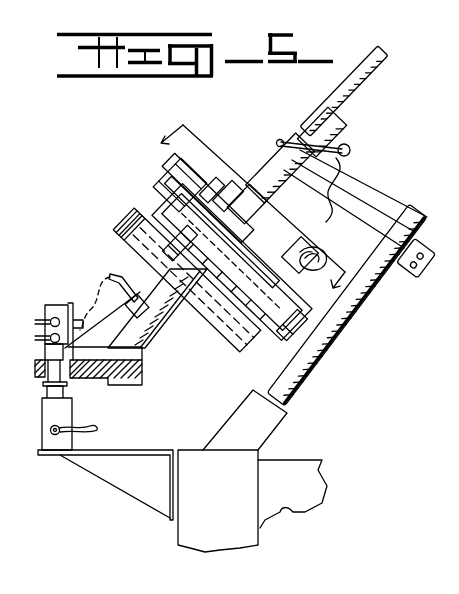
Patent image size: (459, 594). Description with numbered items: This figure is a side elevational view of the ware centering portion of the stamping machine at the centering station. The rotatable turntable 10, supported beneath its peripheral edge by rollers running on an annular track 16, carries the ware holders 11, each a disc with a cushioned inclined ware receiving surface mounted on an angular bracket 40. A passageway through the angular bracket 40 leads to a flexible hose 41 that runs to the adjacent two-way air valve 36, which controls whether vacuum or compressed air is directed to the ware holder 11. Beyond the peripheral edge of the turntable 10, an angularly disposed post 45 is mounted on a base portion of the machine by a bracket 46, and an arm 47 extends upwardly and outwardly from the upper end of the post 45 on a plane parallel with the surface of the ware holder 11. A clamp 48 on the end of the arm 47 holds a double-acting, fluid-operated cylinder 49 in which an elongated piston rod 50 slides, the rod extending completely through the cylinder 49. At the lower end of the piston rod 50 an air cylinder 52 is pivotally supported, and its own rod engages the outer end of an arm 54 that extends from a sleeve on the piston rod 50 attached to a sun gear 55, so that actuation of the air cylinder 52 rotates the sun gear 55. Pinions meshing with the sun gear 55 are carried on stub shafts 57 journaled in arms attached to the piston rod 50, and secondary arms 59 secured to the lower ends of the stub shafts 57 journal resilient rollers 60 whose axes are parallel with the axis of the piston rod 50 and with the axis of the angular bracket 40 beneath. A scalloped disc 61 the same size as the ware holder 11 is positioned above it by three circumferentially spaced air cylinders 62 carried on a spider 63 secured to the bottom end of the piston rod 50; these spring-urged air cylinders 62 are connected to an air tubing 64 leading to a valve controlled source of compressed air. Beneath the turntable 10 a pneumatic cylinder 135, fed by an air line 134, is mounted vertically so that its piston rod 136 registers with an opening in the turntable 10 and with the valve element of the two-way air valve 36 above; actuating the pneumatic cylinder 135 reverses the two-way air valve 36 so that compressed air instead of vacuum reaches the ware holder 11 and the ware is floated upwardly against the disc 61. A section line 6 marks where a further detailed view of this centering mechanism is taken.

The section line 6 is at (245, 213).
The rotatable turntable 10 is at (144, 370).
The ware holder 11 is at (117, 220).
The annular track 16 is at (143, 379).
The two-way air valve 36 is at (47, 305).
The angular bracket 40 is at (152, 332).
The flexible hose 41 is at (112, 275).
The angularly disposed post 45 is at (318, 358).
The bracket 46 is at (282, 420).
The arm 47 is at (358, 213).
The clamp 48 is at (282, 138).
The cylinder 49 is at (264, 177).
The piston rod 50 is at (363, 85).
The air cylinder 52 is at (302, 268).
The arm 54 is at (317, 266).
The sun gear 55 is at (233, 190).
The stub shaft 57 is at (215, 185).
The secondary arm 59 is at (180, 230).
The resilient roller 60 is at (177, 240).
The scalloped disc 61 is at (165, 195).
The air cylinder 62 is at (167, 160).
The spider 63 is at (208, 213).
The air tubing 64 is at (238, 198).
The air line 134 is at (98, 431).
The pneumatic cylinder 135 is at (55, 455).
The piston rod 136 is at (64, 393).